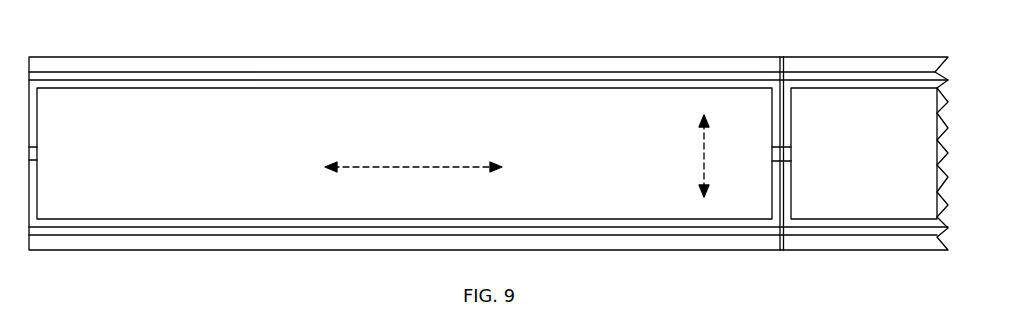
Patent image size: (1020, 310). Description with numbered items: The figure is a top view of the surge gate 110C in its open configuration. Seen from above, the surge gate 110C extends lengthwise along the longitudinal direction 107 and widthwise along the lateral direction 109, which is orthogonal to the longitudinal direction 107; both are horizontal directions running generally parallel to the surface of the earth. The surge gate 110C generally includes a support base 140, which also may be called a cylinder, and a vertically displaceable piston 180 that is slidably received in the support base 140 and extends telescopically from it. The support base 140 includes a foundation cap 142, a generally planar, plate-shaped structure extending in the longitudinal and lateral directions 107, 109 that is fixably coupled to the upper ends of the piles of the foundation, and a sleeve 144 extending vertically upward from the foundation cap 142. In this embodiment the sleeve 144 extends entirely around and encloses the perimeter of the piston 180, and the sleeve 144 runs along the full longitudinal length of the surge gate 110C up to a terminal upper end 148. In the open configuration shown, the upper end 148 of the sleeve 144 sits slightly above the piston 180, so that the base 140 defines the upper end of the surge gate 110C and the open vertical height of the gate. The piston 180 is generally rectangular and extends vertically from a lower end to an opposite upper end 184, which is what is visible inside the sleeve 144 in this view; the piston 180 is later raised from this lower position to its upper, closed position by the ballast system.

The surge gate 110C is at (78, 73).
The support base 140 is at (130, 62).
The foundation cap 142 is at (273, 65).
The sleeve 144 is at (806, 270).
The terminal upper end 148 is at (470, 72).
The piston 180 is at (152, 193).
The upper end 184 is at (268, 193).
The longitudinal direction 107 is at (387, 166).
The lateral direction 109 is at (702, 157).